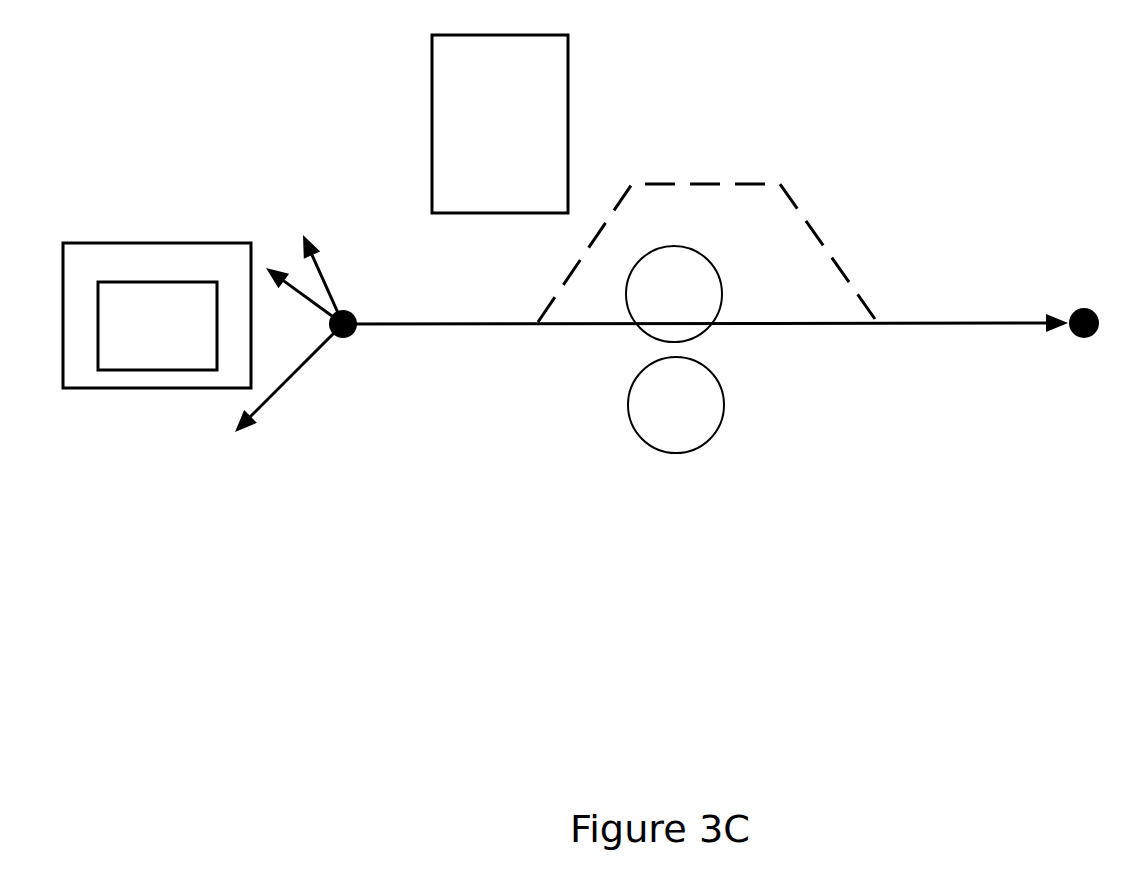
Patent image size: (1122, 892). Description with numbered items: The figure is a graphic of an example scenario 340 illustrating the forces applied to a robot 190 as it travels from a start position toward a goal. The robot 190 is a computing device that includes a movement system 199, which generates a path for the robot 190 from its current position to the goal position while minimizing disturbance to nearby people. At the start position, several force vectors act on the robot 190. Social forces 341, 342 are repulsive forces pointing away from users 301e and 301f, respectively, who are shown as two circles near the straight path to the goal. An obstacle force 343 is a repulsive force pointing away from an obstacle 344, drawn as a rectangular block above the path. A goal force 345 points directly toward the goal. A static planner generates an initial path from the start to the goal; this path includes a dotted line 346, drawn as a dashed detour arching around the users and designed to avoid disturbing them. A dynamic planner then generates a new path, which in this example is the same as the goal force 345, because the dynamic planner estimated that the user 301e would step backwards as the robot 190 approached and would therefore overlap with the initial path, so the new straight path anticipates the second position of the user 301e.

The example scenario 340 is at (68, 78).
The robot 190 is at (157, 315).
The movement system 199 is at (157, 326).
The social force 341 is at (317, 263).
The social force 342 is at (318, 306).
The obstacle force 343 is at (288, 379).
The obstacle 344 is at (568, 105).
The goal force 345 is at (958, 323).
The dotted line 346 is at (783, 184).
The user 301e is at (674, 294).
The user 301f is at (676, 405).